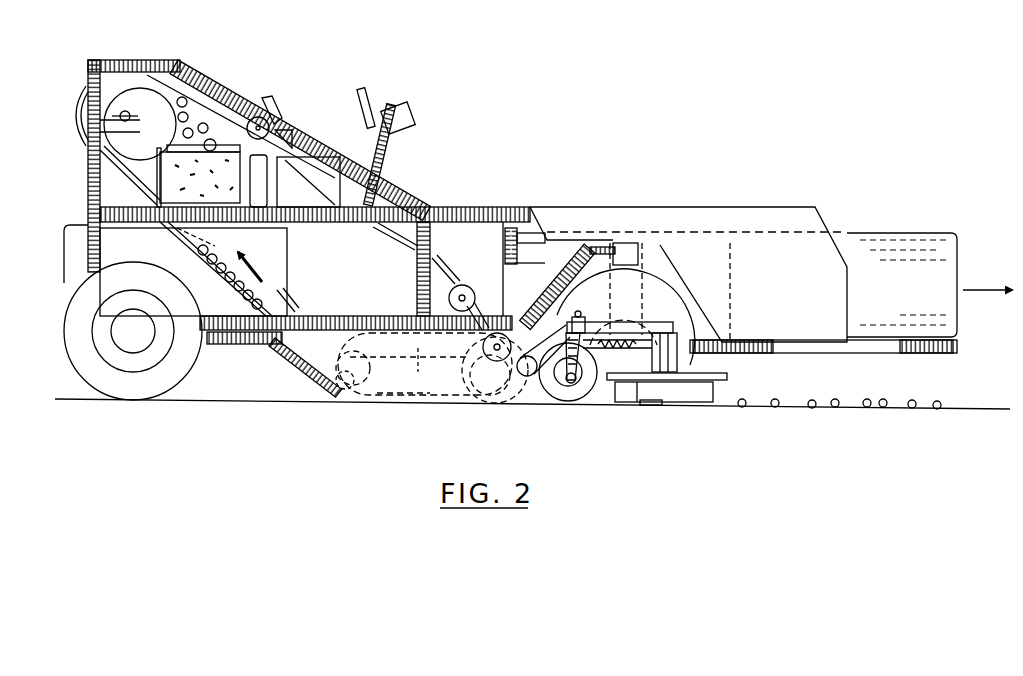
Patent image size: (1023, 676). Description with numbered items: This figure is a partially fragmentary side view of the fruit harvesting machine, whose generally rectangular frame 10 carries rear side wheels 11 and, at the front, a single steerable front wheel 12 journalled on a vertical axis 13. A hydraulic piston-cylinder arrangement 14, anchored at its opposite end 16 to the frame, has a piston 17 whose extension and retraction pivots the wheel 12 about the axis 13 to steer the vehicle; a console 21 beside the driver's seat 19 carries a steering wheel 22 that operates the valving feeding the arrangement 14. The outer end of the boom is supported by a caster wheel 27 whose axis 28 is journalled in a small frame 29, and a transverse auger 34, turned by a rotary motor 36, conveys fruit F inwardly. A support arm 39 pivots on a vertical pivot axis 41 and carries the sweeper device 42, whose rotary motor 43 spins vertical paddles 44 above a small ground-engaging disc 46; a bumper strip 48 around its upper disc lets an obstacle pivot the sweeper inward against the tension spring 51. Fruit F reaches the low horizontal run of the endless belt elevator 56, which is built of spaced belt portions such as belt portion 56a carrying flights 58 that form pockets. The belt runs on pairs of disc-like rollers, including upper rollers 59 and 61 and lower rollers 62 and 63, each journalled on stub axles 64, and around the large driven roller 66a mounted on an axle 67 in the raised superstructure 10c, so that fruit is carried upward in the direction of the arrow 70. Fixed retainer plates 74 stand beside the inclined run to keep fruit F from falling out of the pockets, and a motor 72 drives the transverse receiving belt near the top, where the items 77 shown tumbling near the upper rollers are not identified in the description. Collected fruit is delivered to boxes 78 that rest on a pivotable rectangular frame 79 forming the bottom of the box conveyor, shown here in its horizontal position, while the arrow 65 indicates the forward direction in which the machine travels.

The frame 10 is at (460, 196).
The raised superstructure 10c is at (196, 62).
The rear side wheels 11 is at (82, 343).
The steerable front wheel 12 is at (662, 283).
The vertical axis 13 is at (650, 258).
The hydraulic piston-cylinder arrangement 14 is at (540, 248).
The opposite end 16 is at (504, 246).
The piston 17 is at (600, 250).
The driver's seat 19 is at (272, 100).
The console 21 is at (386, 142).
The steering wheel 22 is at (374, 94).
The caster wheel 27 is at (545, 378).
The axis 28 is at (568, 401).
The frame 29 is at (592, 398).
The auger 34 is at (457, 405).
The rotary motor 36 is at (515, 395).
The support arm 39 is at (660, 310).
The vertical pivot axis 41 is at (578, 314).
The sweeper device 42 is at (722, 398).
The rotary motor 43 is at (683, 345).
The paddles 44 is at (705, 403).
The disc 46 is at (652, 405).
The bumper strip 48 is at (726, 376).
The tension spring 51 is at (616, 344).
The endless belt elevator 56 is at (178, 252).
The endless belt portion 56a is at (406, 250).
The flight 58 is at (243, 292).
The upper rollers 59 is at (234, 104).
The upper rollers 61 is at (480, 304).
The lower rollers 62 is at (480, 375).
The lower rollers 63 is at (362, 357).
The stub axles 64 is at (280, 124).
The arrow 65 is at (986, 290).
The large roller 66a is at (82, 118).
The axle 67 is at (120, 116).
The arrow 70 is at (252, 256).
The motor 72 is at (270, 190).
The retainer plates 74 is at (112, 170).
The articles 77 is at (215, 135).
The boxes 78 is at (72, 246).
The rectangular frame 79 is at (266, 342).
The fruit F is at (265, 290).